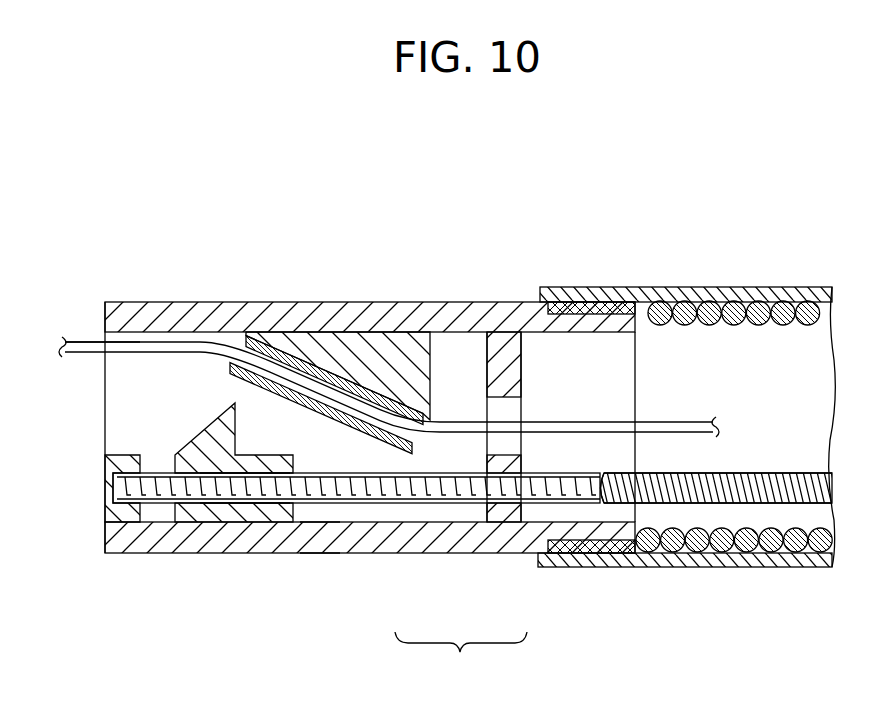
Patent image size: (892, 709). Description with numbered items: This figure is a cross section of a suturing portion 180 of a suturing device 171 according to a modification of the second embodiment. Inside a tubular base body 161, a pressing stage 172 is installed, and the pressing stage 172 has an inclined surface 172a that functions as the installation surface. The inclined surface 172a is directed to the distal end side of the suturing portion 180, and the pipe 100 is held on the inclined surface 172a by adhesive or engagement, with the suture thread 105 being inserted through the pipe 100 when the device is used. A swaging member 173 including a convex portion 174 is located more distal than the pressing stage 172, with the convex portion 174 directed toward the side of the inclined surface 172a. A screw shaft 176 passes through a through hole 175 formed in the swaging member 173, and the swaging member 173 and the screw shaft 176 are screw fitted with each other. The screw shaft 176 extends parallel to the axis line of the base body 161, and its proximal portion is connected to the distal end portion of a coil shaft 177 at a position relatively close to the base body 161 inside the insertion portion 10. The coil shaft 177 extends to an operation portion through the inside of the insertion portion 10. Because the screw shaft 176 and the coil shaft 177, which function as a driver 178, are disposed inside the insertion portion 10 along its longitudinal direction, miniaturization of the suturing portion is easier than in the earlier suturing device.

The insertion portion 10 is at (733, 280).
The pipe 100 is at (242, 374).
The suture thread 105 is at (84, 340).
The tubular base body 161 is at (322, 553).
The suturing device 171 is at (533, 267).
The pressing stage 172 is at (403, 340).
The inclined surface 172a is at (305, 378).
The swaging member 173 is at (208, 465).
The convex portion 174 is at (236, 404).
The through hole 175 is at (243, 488).
The screw shaft 176 is at (423, 501).
The coil shaft 177 is at (630, 503).
The driver 178 is at (461, 663).
The suturing portion 180 is at (245, 292).